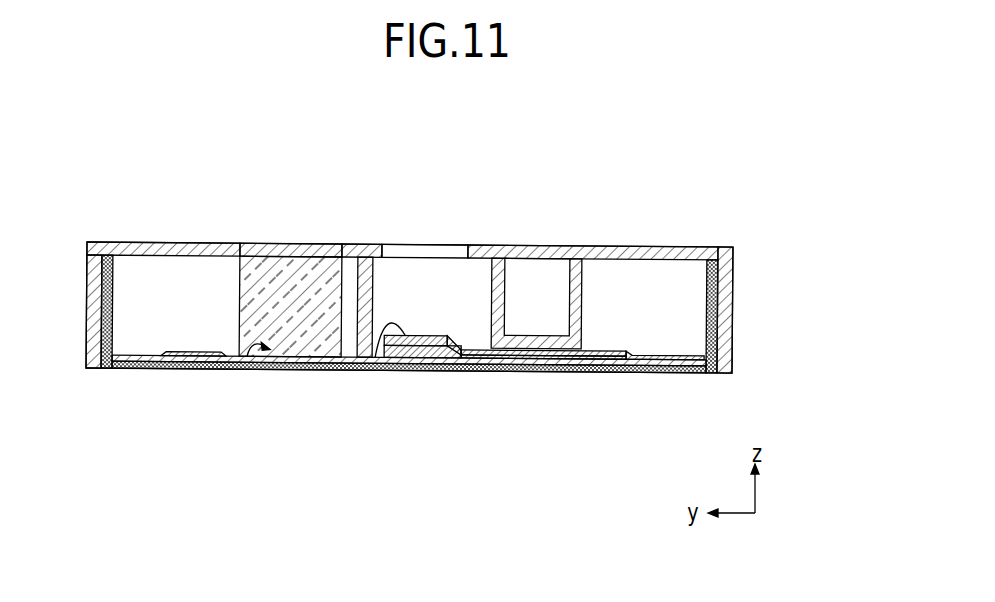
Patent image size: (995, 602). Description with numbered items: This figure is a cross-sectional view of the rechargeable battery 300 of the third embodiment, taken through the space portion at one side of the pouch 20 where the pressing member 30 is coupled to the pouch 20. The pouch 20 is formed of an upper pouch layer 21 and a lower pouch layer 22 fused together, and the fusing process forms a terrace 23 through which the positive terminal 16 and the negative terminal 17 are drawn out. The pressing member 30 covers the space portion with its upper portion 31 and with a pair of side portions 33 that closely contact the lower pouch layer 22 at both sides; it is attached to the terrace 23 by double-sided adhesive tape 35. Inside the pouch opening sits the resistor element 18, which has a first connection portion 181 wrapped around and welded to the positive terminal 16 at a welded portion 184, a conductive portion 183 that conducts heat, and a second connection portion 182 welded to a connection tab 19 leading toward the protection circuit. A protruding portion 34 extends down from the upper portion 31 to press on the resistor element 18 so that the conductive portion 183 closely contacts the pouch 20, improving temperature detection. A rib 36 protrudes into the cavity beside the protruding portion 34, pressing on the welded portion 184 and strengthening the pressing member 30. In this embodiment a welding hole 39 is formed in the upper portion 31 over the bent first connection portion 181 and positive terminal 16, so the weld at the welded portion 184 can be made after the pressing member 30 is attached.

The rechargeable battery 300 is at (377, 137).
The pressing member 30 is at (402, 269).
The upper portion 31 is at (278, 242).
The rib 36 is at (360, 288).
The welding hole 39 is at (430, 248).
The protruding portion 34 is at (537, 330).
The pouch 20 is at (678, 178).
The upper pouch layer 21 is at (710, 278).
The lower pouch layer 22 is at (725, 280).
The side portion 33 is at (735, 305).
The negative terminal 17 is at (192, 357).
The terrace 23 is at (248, 355).
The double-sided adhesive tape 35 is at (313, 330).
The welded portion 184 is at (376, 355).
The positive terminal 16 is at (403, 356).
The first connection portion 181 is at (470, 362).
The conductive portion 183 is at (530, 362).
The second connection portion 182 is at (588, 362).
The connection tab 19 is at (662, 372).
The resistor element 18 is at (452, 447).